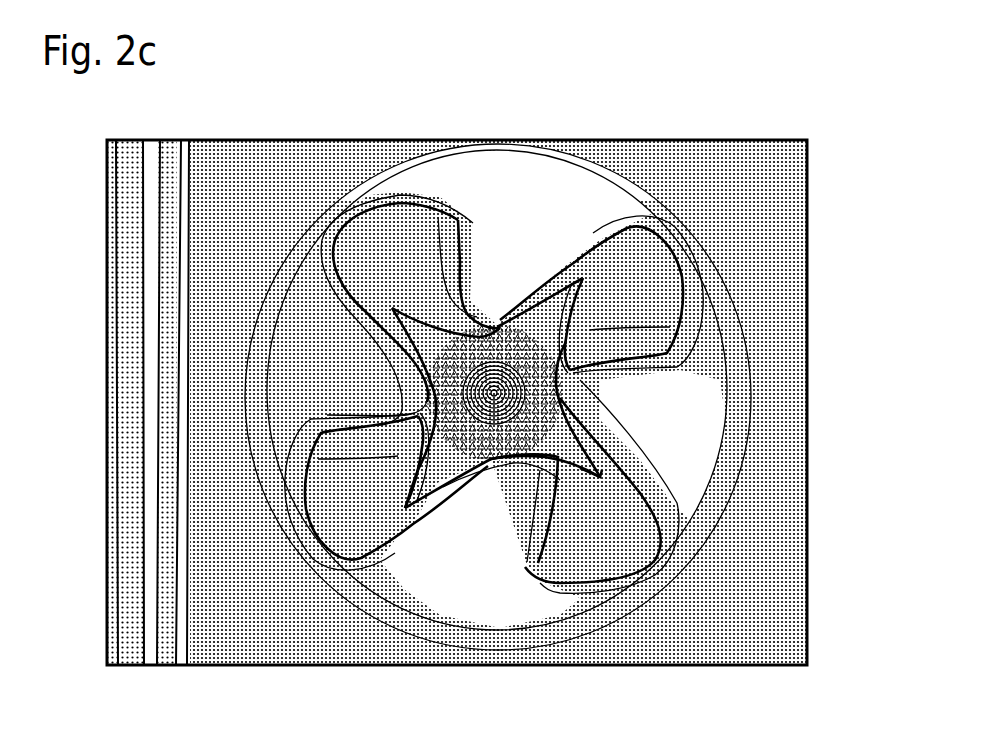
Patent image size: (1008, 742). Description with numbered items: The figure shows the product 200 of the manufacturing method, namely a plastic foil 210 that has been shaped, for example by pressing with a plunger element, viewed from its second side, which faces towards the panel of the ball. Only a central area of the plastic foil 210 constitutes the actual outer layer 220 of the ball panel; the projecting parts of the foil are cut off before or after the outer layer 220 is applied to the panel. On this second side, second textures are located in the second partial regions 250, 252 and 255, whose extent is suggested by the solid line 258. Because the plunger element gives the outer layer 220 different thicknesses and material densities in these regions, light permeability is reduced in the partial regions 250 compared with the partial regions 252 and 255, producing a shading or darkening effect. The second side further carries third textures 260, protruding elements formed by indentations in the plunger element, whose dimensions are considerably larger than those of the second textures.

The product 200 is at (735, 114).
The plastic foil 210 is at (270, 600).
The outer layer 220 is at (497, 330).
The second partial region 250 is at (625, 540).
The second partial region 252 is at (447, 253).
The second partial region 255 is at (560, 453).
The solid line 258 is at (540, 310).
The third textures 260 is at (535, 397).